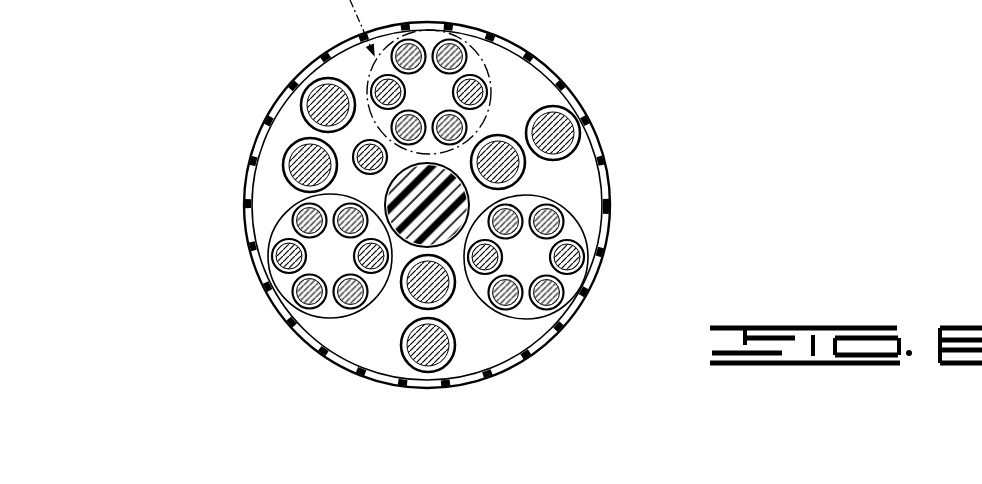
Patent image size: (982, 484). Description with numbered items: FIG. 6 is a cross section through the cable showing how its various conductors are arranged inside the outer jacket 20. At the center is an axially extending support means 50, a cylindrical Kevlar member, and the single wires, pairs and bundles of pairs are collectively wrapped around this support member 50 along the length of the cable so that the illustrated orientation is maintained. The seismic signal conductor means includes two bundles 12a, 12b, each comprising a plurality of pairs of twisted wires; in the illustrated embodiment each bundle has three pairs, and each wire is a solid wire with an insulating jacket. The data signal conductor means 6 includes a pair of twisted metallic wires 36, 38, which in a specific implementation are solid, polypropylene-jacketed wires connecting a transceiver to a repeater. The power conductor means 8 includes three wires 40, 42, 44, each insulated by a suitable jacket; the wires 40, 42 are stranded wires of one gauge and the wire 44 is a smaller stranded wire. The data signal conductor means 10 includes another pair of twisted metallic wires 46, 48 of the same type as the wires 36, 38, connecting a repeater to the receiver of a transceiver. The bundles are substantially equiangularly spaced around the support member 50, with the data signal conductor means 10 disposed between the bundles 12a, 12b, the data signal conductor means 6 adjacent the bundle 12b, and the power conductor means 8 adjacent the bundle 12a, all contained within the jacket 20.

The data signal conductor means 6 is at (424, 223).
The power conductor means 8 is at (292, 135).
The data signal conductor means 10 is at (405, 384).
The bundle 12a is at (289, 295).
The bundle 12b is at (552, 342).
The jacket 20 is at (530, 66).
The twisted metallic wire 36 is at (562, 139).
The twisted metallic wire 38 is at (520, 178).
The wire 40 is at (297, 168).
The wire 42 is at (297, 205).
The wire 44 is at (308, 84).
The twisted metallic wire 46 is at (443, 366).
The twisted metallic wire 48 is at (442, 298).
The support means 50 is at (407, 252).